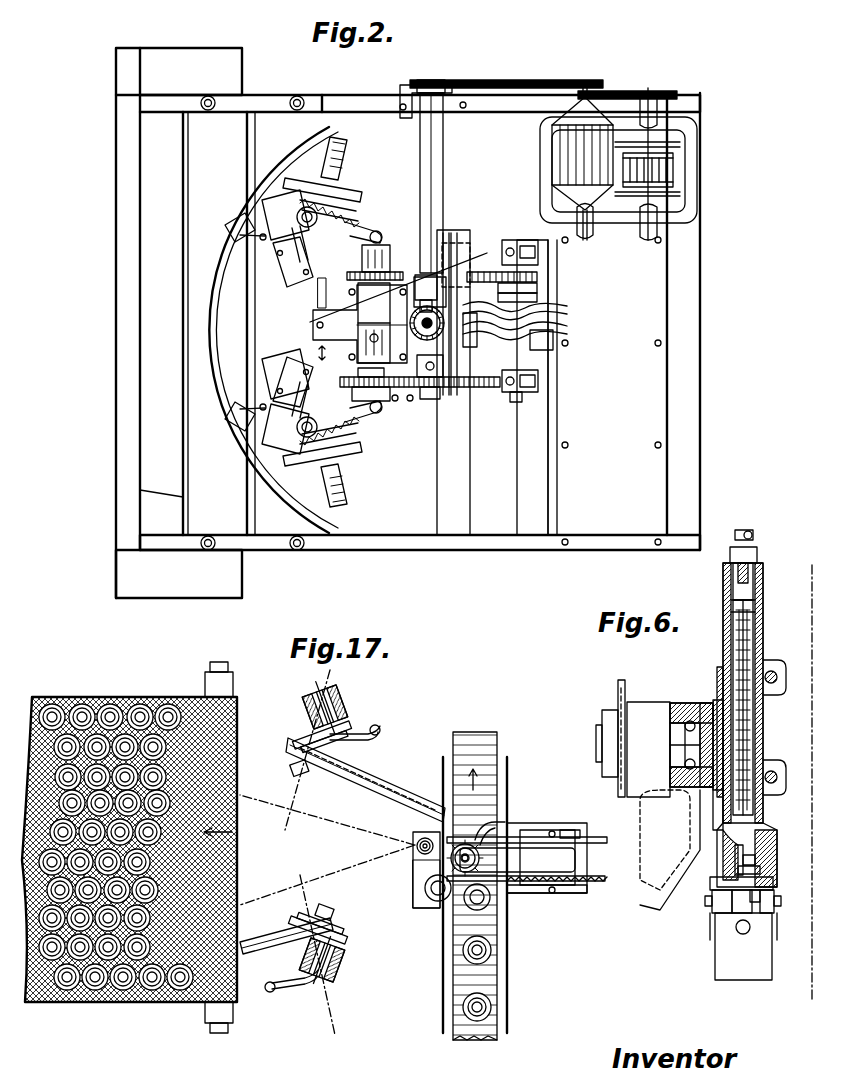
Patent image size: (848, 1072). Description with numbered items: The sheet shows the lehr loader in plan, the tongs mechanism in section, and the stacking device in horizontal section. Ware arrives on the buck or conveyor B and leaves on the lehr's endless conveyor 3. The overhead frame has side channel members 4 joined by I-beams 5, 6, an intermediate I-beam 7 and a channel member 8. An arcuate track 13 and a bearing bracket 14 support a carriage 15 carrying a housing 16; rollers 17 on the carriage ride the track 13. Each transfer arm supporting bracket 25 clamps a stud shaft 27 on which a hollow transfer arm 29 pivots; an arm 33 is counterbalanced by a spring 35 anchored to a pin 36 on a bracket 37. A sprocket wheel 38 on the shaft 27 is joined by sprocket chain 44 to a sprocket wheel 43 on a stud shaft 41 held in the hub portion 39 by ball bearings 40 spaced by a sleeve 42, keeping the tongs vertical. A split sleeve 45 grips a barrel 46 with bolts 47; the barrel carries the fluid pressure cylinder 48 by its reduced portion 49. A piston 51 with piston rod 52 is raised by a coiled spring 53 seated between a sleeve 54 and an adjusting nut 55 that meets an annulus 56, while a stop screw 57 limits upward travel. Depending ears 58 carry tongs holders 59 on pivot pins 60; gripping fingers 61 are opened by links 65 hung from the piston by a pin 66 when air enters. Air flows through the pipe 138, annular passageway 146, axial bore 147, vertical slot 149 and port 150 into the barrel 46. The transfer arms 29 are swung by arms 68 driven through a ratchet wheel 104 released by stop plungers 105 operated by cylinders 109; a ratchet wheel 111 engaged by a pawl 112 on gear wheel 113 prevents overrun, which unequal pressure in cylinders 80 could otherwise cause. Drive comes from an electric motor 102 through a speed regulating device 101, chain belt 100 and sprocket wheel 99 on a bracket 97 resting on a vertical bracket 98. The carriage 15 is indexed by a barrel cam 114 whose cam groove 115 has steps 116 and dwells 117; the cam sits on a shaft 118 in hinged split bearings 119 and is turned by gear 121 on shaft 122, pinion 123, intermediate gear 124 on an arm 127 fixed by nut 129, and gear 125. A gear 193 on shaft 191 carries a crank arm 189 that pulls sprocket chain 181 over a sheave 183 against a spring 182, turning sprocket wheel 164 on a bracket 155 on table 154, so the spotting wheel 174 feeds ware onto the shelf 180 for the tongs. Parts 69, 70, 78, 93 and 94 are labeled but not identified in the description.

In FIG. 17, the endless conveyor 3 is at (170, 1002).
In FIG. 2, the side channel members 4 is at (340, 100).
In FIG. 2, the I-beam 5 is at (693, 388).
In FIG. 2, the I-beam 6 is at (128, 384).
In FIG. 2, the intermediate I-beam 7 is at (437, 540).
In FIG. 2, the channel member 8 is at (535, 540).
In FIG. 2, the arcuate track 13 is at (214, 260).
In FIG. 2, the bearing bracket 14 is at (321, 352).
In FIG. 2, the carriage 15 is at (247, 328).
In FIG. 2, the mechanism box or housing 16 is at (340, 325).
In FIG. 2, the rollers 17 is at (240, 222).
In FIG. 2, the transfer arm supporting bracket 25 is at (345, 163).
In FIG. 17, the transfer arm supporting bracket 25 is at (316, 705).
In FIG. 17, the stud shaft 27 is at (328, 698).
In FIG. 2, the transfer arm 29 is at (358, 208).
In FIG. 17, the transfer arm 29 is at (372, 790).
In FIG. 6, the transfer arm 29 is at (715, 890).
In FIG. 17, the arm 33 is at (350, 732).
In FIG. 2, the spring 35 is at (340, 208).
In FIG. 2, the pin 36 is at (296, 185).
In FIG. 2, the bracket 37 is at (283, 262).
In FIG. 17, the sprocket wheel 38 is at (295, 768).
In FIG. 6, the hub portion 39 is at (678, 710).
In FIG. 6, the ball bearings 40 is at (712, 792).
In FIG. 6, the stud shaft 41 is at (680, 750).
In FIG. 6, the sleeve 42 is at (670, 850).
In FIG. 17, the sprocket wheel 43 is at (450, 800).
In FIG. 6, the sprocket wheel 43 is at (615, 690).
In FIG. 17, the sprocket chain 44 is at (385, 783).
In FIG. 17, the split sleeve 45 is at (418, 852).
In FIG. 6, the split sleeve 45 is at (763, 730).
In FIG. 17, the barrel 46 is at (415, 845).
In FIG. 6, the barrel 46 is at (763, 648).
In FIG. 6, the bolts 47 is at (776, 674).
In FIG. 6, the fluid pressure cylinder 48 is at (760, 845).
In FIG. 6, the reduced portion 49 is at (763, 822).
In FIG. 6, the piston 51 is at (757, 860).
In FIG. 6, the piston rod 52 is at (758, 770).
In FIG. 6, the coiled spring 53 is at (753, 712).
In FIG. 6, the sleeve 54 is at (750, 760).
In FIG. 6, the adjusting nut 55 is at (735, 588).
In FIG. 6, the annulus 56 is at (762, 620).
In FIG. 6, the stop screw 57 is at (753, 535).
In FIG. 6, the depending ears 58 is at (715, 912).
In FIG. 6, the tongs holder 59 is at (735, 912).
In FIG. 6, the pivot pin 60 is at (760, 898).
In FIG. 6, the gripping fingers 61 is at (752, 960).
In FIG. 6, the links 65 is at (735, 862).
In FIG. 6, the pin 66 is at (760, 872).
In FIG. 2, the arms 68 is at (440, 290).
In FIG. 2, the roller 69 is at (378, 232).
In FIG. 2, the roller arm 70 is at (390, 225).
In FIG. 2, the clamp plate 78 is at (258, 237).
In FIG. 17, the clamp plate 78 is at (300, 730).
In FIG. 2, the cylinders 80 is at (300, 212).
In FIG. 2, the bracket 93 is at (445, 392).
In FIG. 2, the collar 94 is at (540, 299).
In FIG. 2, the bracket 97 is at (440, 152).
In FIG. 2, the vertical bracket 98 is at (395, 100).
In FIG. 2, the sprocket wheel 99 is at (432, 82).
In FIG. 2, the chain belt 100 is at (510, 80).
In FIG. 2, the speed regulating device 101 is at (665, 168).
In FIG. 2, the electric motor 102 is at (585, 140).
In FIG. 2, the ratchet wheel 104 is at (431, 283).
In FIG. 2, the stop plungers 105 is at (375, 262).
In FIG. 2, the cylinder 109 is at (357, 305).
In FIG. 2, the ratchet wheel 111 is at (374, 323).
In FIG. 2, the pawl 112 is at (320, 360).
In FIG. 2, the gear wheel 113 is at (425, 380).
In FIG. 2, the barrel cam 114 is at (553, 338).
In FIG. 2, the cam groove 115 is at (567, 308).
In FIG. 2, the steps 116 is at (530, 340).
In FIG. 2, the dwells 117 is at (567, 322).
In FIG. 2, the shaft 118 is at (518, 402).
In FIG. 2, the hinged split bearings 119 is at (538, 385).
In FIG. 2, the gear 121 is at (470, 392).
In FIG. 2, the shaft 122 is at (440, 400).
In FIG. 2, the pinion 123 is at (462, 240).
In FIG. 2, the intermediate gear 124 is at (522, 242).
In FIG. 2, the gear 125 is at (537, 290).
In FIG. 2, the arm 127 is at (537, 275).
In FIG. 2, the nut 129 is at (487, 253).
In FIG. 2, the pipe 138 is at (329, 282).
In FIG. 6, the annular passageway 146 is at (672, 725).
In FIG. 6, the axial bore 147 is at (672, 745).
In FIG. 6, the vertical slot 149 is at (719, 690).
In FIG. 6, the port 150 is at (716, 700).
In FIG. 17, the table 154 is at (580, 893).
In FIG. 17, the bracket 155 is at (575, 860).
In FIG. 17, the sprocket wheel 164 is at (492, 822).
In FIG. 17, the spotting wheel 174 is at (420, 880).
In FIG. 17, the shelf or table 180 is at (430, 900).
In FIG. 17, the sprocket chain 181 is at (520, 837).
In FIG. 17, the spring 182 is at (590, 885).
In FIG. 17, the sheave or pulley 183 is at (575, 830).
In FIG. 2, the crank arm 189 is at (370, 405).
In FIG. 2, the shaft 191 is at (398, 402).
In FIG. 2, the gear 193 is at (413, 402).
In FIG. 17, the buck or conveyor B is at (507, 955).